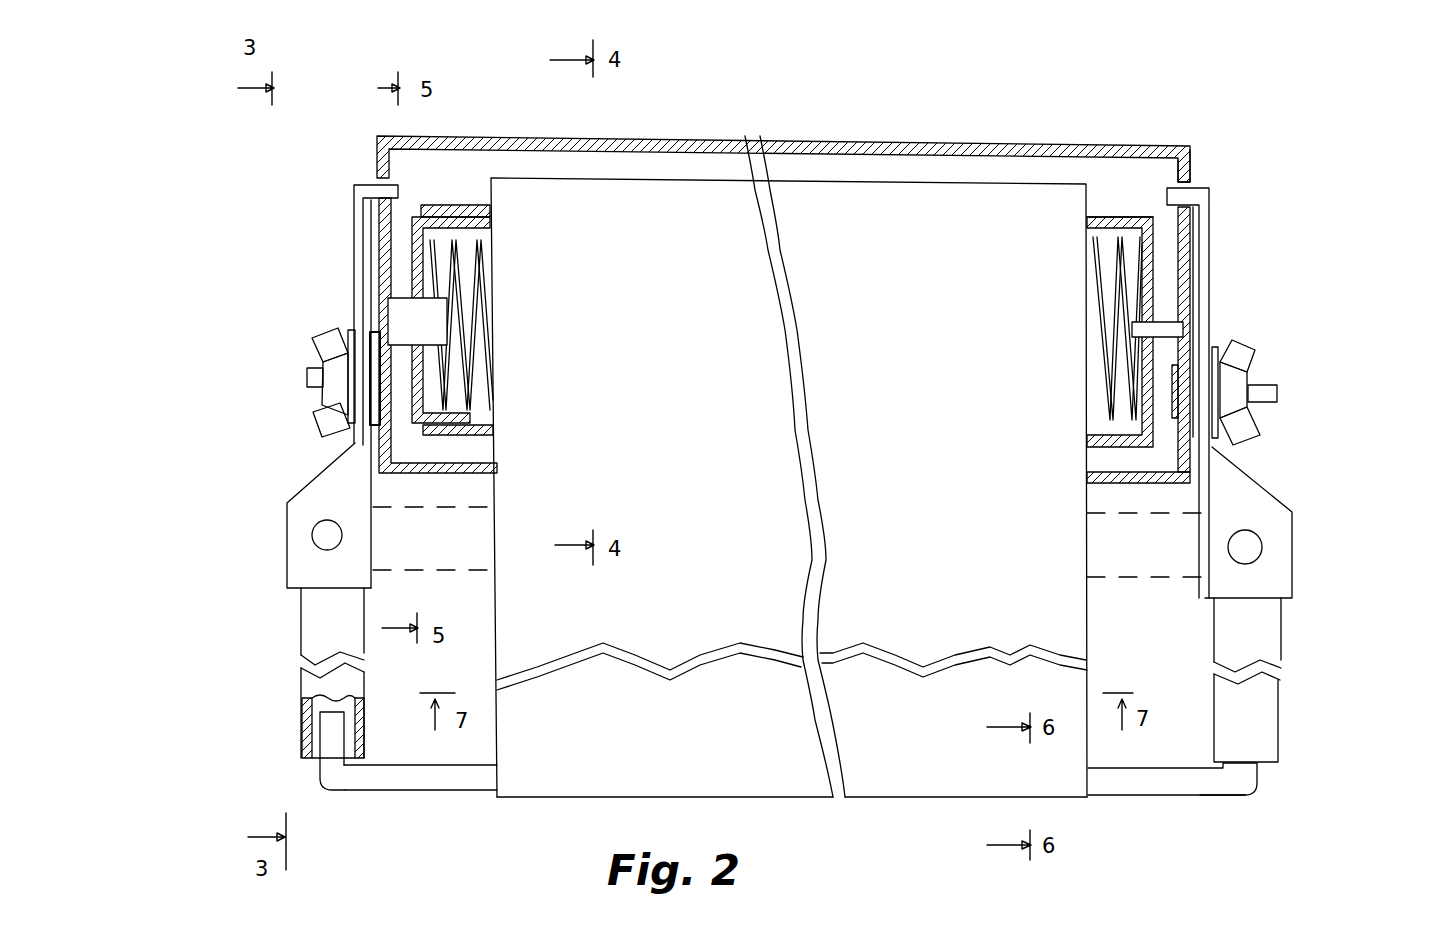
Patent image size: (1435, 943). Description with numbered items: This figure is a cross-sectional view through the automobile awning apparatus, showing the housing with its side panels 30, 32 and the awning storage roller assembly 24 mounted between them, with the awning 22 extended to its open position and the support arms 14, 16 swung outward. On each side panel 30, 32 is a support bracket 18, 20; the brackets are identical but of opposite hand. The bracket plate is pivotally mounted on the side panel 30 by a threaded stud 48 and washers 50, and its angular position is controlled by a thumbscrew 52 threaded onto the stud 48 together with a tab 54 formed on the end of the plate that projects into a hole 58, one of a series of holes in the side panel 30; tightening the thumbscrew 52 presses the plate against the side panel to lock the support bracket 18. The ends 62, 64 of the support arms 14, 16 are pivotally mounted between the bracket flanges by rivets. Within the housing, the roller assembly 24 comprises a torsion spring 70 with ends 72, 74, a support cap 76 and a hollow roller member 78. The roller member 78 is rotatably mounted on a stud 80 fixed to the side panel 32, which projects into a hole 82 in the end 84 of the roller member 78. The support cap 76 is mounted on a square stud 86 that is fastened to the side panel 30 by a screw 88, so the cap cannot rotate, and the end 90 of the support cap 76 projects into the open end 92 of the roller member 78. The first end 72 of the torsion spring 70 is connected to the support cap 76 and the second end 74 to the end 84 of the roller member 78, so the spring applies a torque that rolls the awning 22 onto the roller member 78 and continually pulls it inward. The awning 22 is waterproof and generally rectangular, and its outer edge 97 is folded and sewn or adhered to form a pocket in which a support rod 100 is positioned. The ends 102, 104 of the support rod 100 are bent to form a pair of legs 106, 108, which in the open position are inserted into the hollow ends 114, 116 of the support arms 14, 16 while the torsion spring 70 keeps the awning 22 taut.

The support arm 14 is at (302, 682).
The support arm 16 is at (1277, 643).
The support bracket 18 is at (300, 500).
The support bracket 20 is at (1250, 487).
The awning 22 is at (907, 213).
The awning storage roller assembly 24 is at (1110, 217).
The side panel 30 is at (377, 162).
The side panel 32 is at (1190, 165).
The threaded stud 48 is at (307, 378).
The washers 50 is at (357, 333).
The thumbscrew 52 is at (315, 415).
The tab 54 is at (360, 193).
The hole 58 is at (392, 175).
The end of support arm 62 is at (313, 612).
The end of support arm 64 is at (1275, 613).
The torsion spring 70 is at (1140, 250).
The first end of torsion spring 72 is at (430, 265).
The second end of torsion spring 74 is at (1140, 297).
The support cap 76 is at (412, 207).
The roller member 78 is at (1095, 215).
The stud 80 is at (1183, 330).
The hole 82 is at (1152, 313).
The end of roller member 84 is at (1150, 483).
The square stud 86 is at (432, 322).
The screw 88 is at (380, 320).
The end of support cap 90 is at (470, 225).
The open end of roller member 92 is at (425, 205).
The outer edge of awning 97 is at (903, 800).
The support rod 100 is at (1142, 785).
The end of support rod 102 is at (347, 790).
The end of support rod 104 is at (1233, 795).
The leg 106 is at (330, 775).
The leg 108 is at (1247, 782).
The hollow end of support arm 114 is at (300, 720).
The hollow end of support arm 116 is at (1270, 732).